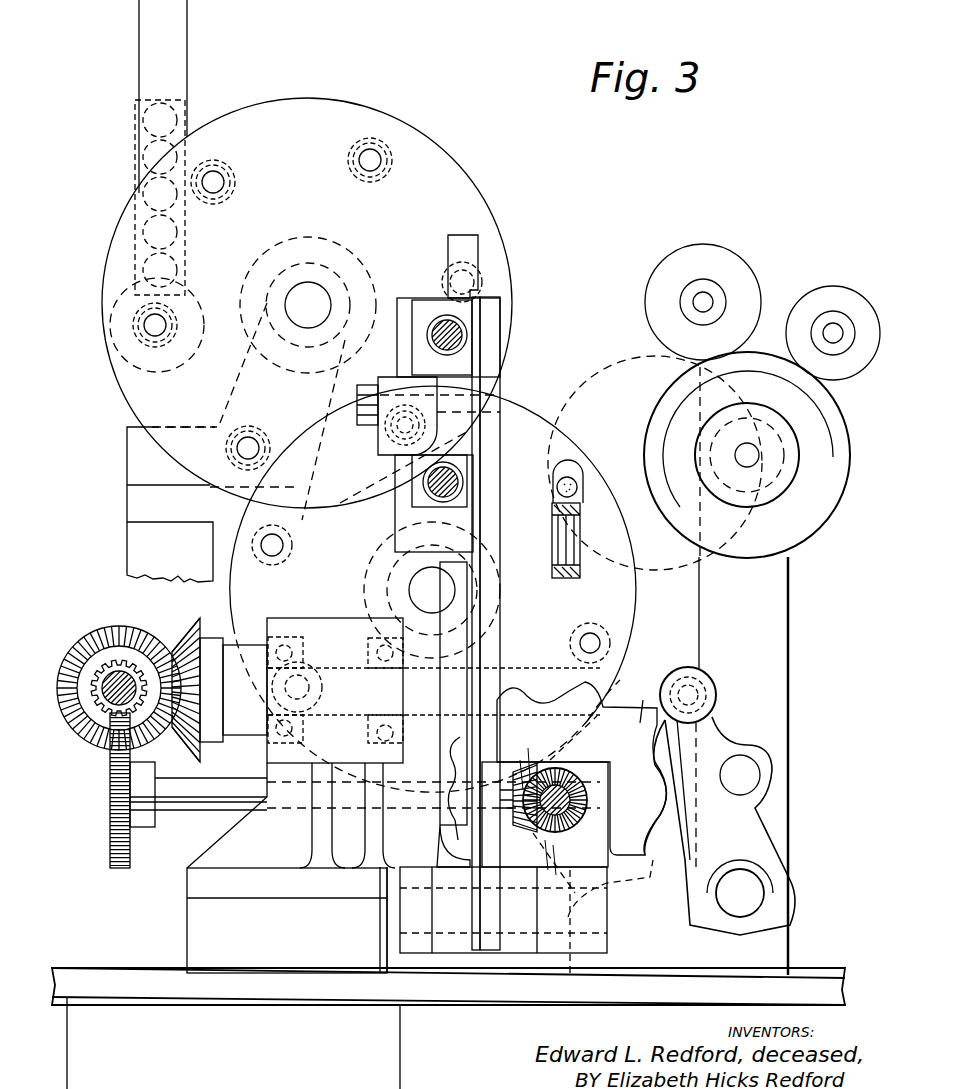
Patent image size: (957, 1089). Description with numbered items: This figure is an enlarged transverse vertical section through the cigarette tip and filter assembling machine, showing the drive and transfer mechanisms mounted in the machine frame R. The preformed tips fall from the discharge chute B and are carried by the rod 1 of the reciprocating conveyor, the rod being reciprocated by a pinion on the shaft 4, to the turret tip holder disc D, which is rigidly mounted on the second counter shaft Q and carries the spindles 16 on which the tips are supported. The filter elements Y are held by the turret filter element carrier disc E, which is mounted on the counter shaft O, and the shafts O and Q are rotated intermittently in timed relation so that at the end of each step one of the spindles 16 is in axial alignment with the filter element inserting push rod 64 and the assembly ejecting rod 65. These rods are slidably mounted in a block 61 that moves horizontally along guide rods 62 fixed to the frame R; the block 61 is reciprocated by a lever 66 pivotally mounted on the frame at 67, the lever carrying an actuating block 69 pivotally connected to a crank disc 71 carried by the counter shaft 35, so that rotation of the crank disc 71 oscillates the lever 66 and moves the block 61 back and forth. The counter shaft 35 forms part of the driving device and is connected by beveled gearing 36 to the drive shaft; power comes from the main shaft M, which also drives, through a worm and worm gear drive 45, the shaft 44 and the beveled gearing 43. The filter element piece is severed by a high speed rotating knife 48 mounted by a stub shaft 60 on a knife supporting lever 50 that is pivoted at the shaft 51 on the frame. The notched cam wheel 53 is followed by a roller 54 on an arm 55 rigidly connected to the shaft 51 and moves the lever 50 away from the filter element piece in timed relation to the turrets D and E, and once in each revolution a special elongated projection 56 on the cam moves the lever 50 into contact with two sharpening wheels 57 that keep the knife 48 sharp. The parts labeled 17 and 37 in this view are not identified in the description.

The discharge chute B is at (179, 31).
The turret cigar or cigarette tip holder disc D is at (305, 98).
The spindles 16 is at (380, 148).
The second counter shaft Q is at (318, 300).
The rod 1 is at (122, 367).
The tip and filter element assembly ejecting rod 65 is at (475, 280).
The guide rods 62 is at (455, 338).
The block 61 is at (470, 400).
The lever 66 is at (487, 460).
The filter element inserting push rod 64 is at (378, 440).
The shaft 4 is at (502, 623).
The filter elements Y is at (570, 488).
The roller shaft 37 is at (553, 512).
The sharpening wheels 57 is at (828, 292).
The stub shaft 60 is at (755, 450).
The high speed rotating knife 48 is at (806, 533).
The main shaft M is at (122, 677).
The beveled gearing 36 is at (183, 650).
The counter shaft 35 is at (243, 645).
The counter shaft O is at (420, 590).
The crank disc 71 is at (455, 668).
The actuating block 69 is at (470, 712).
The bearing 17 is at (600, 640).
The turret filter element carrier disc E is at (625, 663).
The special elongated projection 56 is at (647, 699).
The roller 54 is at (703, 683).
The arm 55 is at (710, 737).
The knife supporting lever 50 is at (790, 648).
The notched cam wheel 53 is at (628, 755).
The beveled gearing 43 is at (553, 838).
The shaft 51 is at (768, 880).
The worm and worm gear drive 45 is at (118, 728).
The shaft 44 is at (175, 806).
The machine frame R is at (135, 963).
The pivot 67 is at (513, 930).